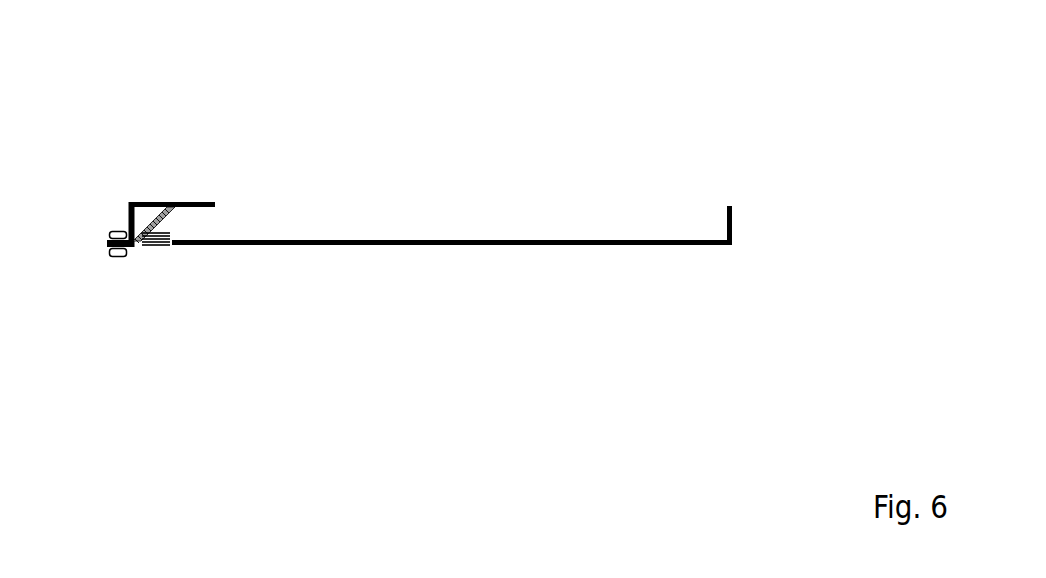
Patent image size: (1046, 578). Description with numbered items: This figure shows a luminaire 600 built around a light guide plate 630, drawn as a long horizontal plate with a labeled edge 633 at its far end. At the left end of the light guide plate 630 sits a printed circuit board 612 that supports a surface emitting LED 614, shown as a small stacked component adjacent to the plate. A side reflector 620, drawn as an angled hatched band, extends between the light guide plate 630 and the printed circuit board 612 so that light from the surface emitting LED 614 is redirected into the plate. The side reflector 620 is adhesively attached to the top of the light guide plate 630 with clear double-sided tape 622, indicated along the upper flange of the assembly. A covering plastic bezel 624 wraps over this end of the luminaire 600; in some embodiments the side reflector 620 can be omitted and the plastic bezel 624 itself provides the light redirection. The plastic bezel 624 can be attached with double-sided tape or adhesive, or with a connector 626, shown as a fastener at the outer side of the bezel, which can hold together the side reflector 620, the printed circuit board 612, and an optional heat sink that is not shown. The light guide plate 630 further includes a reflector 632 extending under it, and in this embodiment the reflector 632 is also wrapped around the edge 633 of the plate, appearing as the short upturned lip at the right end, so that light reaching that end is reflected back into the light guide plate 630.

The luminaire 600 is at (255, 121).
The printed circuit board 612 is at (177, 262).
The surface emitting LED 614 is at (153, 250).
The side reflector 620 is at (157, 212).
The clear double-sided tape 622 is at (213, 210).
The covering plastic bezel 624 is at (122, 218).
The connector 626 is at (117, 260).
The light guide plate 630 is at (540, 230).
The reflector 632 is at (641, 247).
The edge 633 is at (737, 217).